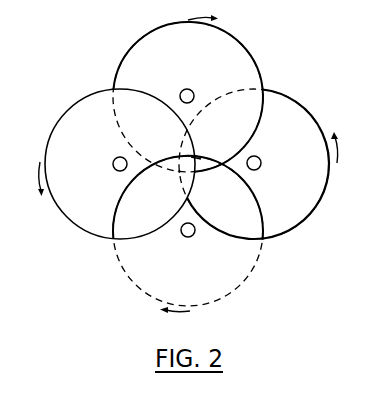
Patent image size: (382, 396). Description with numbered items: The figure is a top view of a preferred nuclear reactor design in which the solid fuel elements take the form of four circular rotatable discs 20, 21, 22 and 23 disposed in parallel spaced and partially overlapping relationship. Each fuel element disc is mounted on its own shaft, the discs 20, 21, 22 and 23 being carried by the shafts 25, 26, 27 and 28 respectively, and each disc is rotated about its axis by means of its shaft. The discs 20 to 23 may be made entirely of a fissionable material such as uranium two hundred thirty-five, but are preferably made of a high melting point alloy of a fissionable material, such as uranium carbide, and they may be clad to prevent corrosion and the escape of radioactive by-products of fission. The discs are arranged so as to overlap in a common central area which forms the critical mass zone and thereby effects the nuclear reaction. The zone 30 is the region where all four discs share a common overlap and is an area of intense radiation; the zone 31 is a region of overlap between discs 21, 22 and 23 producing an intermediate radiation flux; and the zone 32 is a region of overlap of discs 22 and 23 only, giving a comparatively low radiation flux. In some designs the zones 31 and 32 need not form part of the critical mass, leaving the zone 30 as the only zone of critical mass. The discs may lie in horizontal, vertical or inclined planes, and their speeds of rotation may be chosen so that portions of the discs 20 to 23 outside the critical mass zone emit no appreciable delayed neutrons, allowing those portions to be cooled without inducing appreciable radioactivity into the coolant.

The disc 20 is at (67, 126).
The disc 21 is at (154, 35).
The disc 22 is at (308, 128).
The disc 23 is at (221, 289).
The shaft 25 is at (113, 157).
The shaft 26 is at (194, 74).
The shaft 27 is at (265, 143).
The shaft 28 is at (183, 231).
The zone of common overlap 30 is at (180, 173).
The zone of overlap 31 is at (196, 158).
The zone of overlap 32 is at (264, 239).